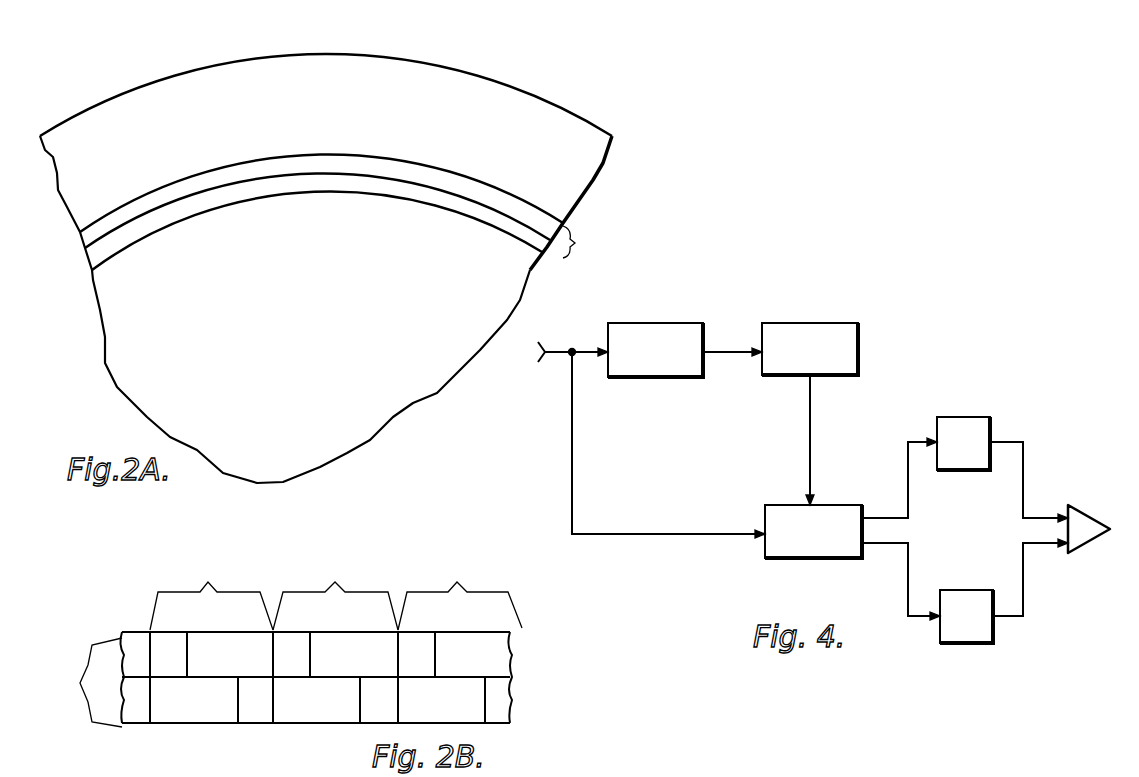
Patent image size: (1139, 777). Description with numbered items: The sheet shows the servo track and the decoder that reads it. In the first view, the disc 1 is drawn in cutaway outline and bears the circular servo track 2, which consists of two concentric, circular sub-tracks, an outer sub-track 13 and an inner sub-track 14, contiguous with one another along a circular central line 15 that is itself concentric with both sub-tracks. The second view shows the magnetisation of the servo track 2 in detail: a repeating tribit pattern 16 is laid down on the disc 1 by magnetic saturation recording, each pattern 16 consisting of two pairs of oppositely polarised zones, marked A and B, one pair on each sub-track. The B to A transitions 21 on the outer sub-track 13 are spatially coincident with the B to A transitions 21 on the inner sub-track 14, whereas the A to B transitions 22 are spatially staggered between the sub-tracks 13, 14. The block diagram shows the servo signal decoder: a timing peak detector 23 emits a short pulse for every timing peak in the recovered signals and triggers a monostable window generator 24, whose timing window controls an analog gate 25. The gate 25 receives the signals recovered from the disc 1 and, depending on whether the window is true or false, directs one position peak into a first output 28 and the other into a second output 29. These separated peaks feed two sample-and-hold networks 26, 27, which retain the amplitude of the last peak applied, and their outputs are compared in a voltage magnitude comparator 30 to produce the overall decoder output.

In FIG. 2A, the disc 1 is at (531, 103).
In FIG. 2A, the servo track 2 is at (576, 251).
In FIG. 2B, the servo track 2 is at (283, 679).
In FIG. 2A, the outer sub-track 13 is at (488, 193).
In FIG. 2B, the outer sub-track 13 is at (512, 650).
In FIG. 2A, the inner sub-track 14 is at (484, 214).
In FIG. 2B, the inner sub-track 14 is at (512, 700).
In FIG. 2A, the central line 15 is at (83, 250).
In FIG. 2B, the central line 15 is at (512, 677).
In FIG. 2B, the repeating tribit pattern 16 is at (336, 592).
In FIG. 2B, the B to A transitions 21 is at (150, 723).
In FIG. 2B, the A to B transitions 22 is at (188, 632).
In FIG. 4, the timing peak detector 23 is at (675, 378).
In FIG. 4, the monostable window generator 24 is at (800, 376).
In FIG. 4, the analog gate 25 is at (782, 560).
In FIG. 4, the sample-and-hold network 26 is at (975, 417).
In FIG. 4, the sample-and-hold network 27 is at (972, 643).
In FIG. 4, the first output 28 is at (908, 440).
In FIG. 4, the second output 29 is at (908, 618).
In FIG. 4, the voltage magnitude comparator 30 is at (1075, 505).